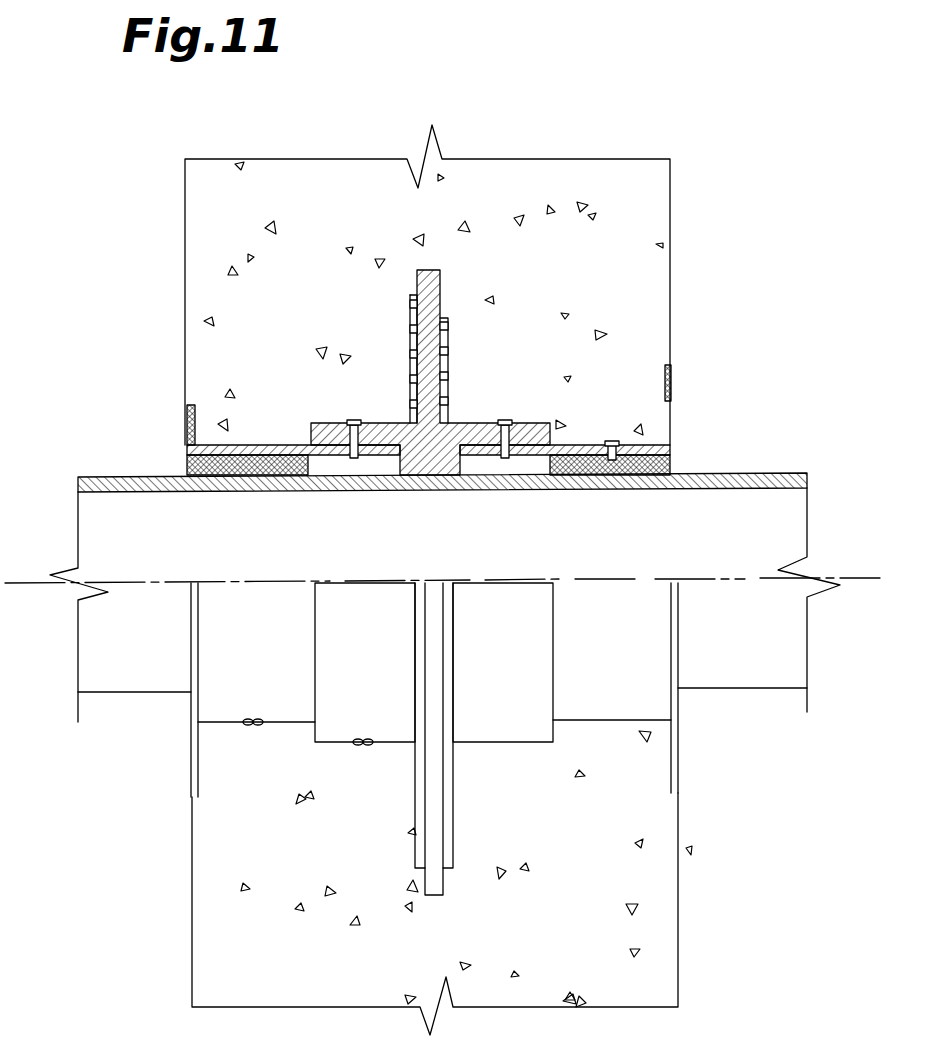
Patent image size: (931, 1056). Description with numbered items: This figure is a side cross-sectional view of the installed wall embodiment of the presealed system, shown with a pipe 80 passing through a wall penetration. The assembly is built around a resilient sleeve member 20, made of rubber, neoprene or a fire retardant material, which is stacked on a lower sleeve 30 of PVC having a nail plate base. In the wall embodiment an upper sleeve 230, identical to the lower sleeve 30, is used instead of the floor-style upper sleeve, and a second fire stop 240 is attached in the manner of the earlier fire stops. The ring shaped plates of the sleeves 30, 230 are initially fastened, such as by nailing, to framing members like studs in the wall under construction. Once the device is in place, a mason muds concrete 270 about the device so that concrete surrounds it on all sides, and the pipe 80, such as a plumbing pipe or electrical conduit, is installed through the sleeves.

The resilient sleeve member 20 is at (430, 310).
The lower sleeve 30 is at (640, 450).
The pipe 80 is at (740, 475).
The upper sleeve 230 is at (243, 447).
The second fire stop 240 is at (197, 475).
The concrete 270 is at (650, 288).